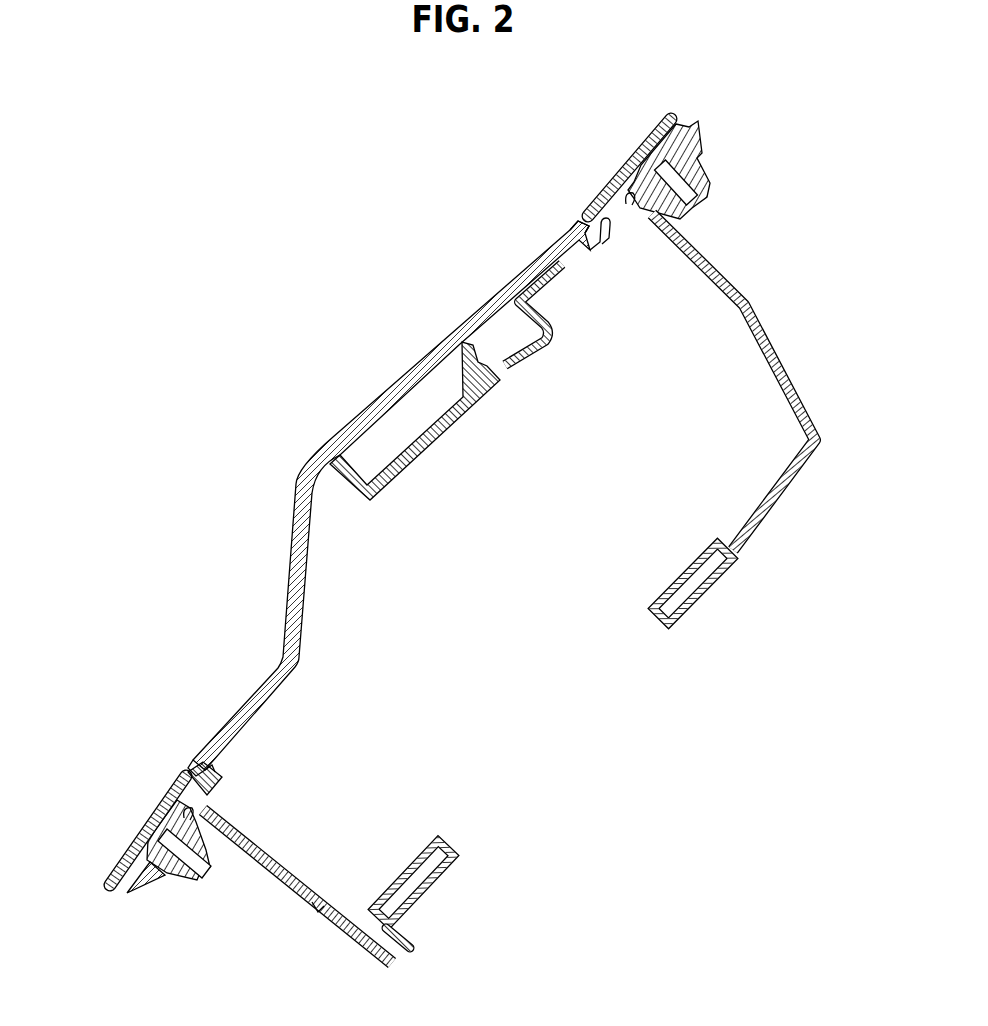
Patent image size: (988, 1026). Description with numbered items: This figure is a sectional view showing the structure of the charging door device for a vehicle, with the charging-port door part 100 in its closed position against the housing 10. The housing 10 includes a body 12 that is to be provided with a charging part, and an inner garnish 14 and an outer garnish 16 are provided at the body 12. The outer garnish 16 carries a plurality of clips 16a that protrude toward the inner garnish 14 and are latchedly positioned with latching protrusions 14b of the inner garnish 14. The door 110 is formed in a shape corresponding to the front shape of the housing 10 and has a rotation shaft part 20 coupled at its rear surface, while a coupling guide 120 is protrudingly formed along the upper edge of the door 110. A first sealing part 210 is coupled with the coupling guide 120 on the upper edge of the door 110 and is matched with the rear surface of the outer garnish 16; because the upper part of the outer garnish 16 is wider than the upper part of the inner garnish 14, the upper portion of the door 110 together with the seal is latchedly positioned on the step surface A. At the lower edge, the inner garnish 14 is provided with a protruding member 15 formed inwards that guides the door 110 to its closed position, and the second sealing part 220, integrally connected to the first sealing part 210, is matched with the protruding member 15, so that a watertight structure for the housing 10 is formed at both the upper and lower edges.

The housing 10 is at (458, 514).
The body 12 is at (730, 290).
The inner garnish 14 is at (684, 128).
The latching protrusions 14b is at (684, 221).
The protruding member 15 is at (212, 790).
The outer garnish 16 is at (655, 138).
The clips 16a is at (628, 206).
The rotation shaft part 20 is at (428, 433).
The charging-port door part 100 is at (372, 484).
The door 110 is at (445, 332).
The coupling guide 120 is at (607, 229).
The first sealing part 210 is at (580, 225).
The second sealing part 220 is at (193, 757).
The step surface A is at (586, 218).